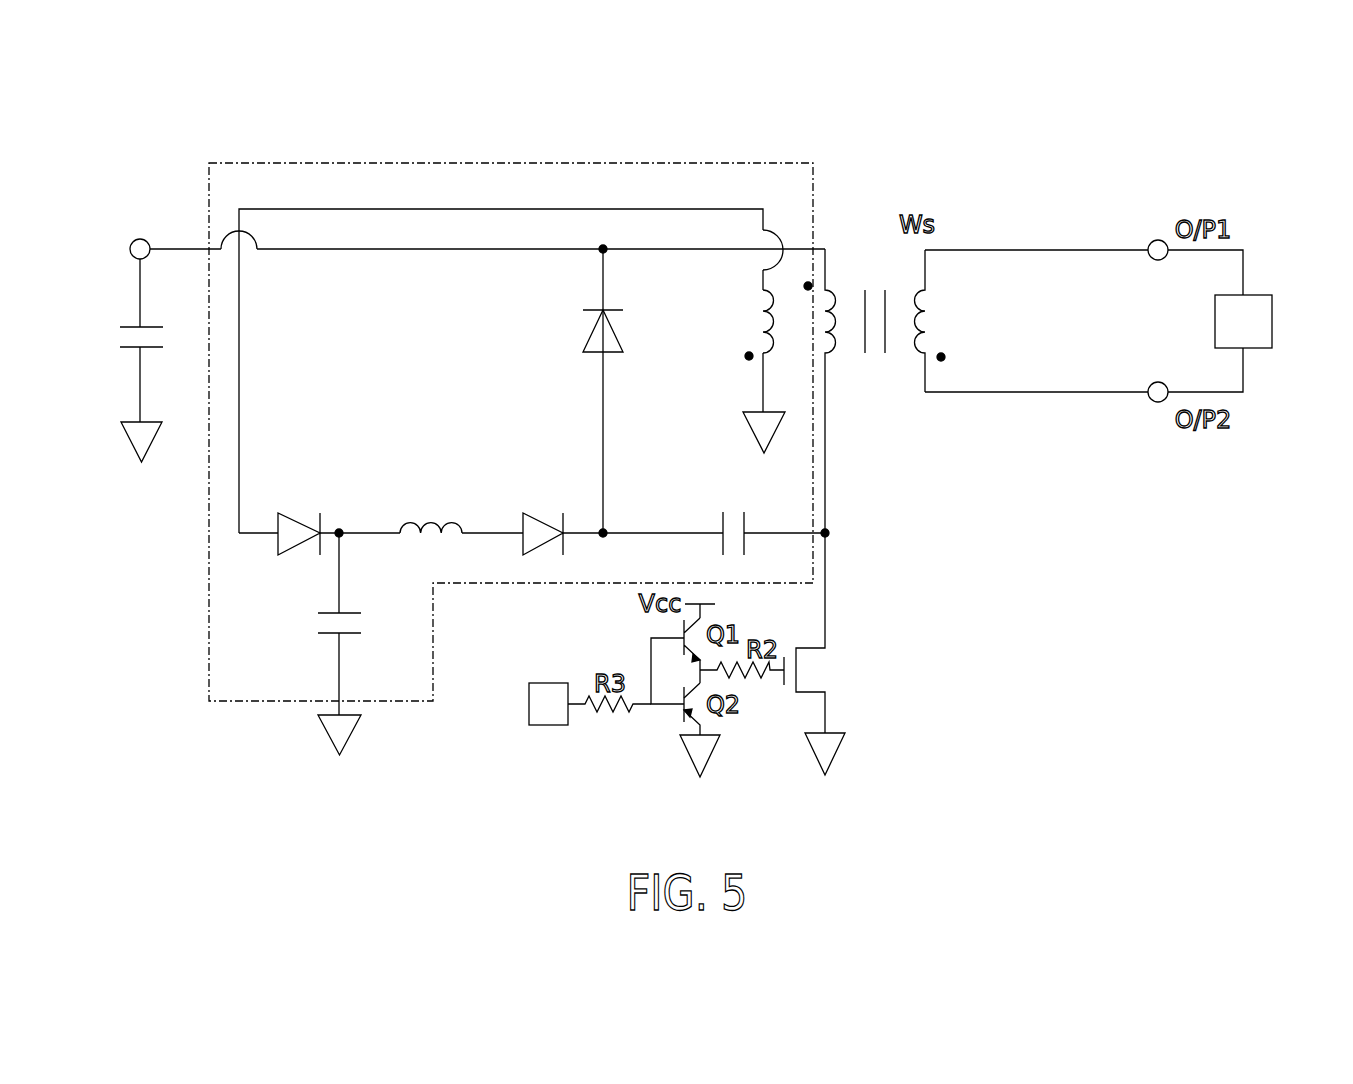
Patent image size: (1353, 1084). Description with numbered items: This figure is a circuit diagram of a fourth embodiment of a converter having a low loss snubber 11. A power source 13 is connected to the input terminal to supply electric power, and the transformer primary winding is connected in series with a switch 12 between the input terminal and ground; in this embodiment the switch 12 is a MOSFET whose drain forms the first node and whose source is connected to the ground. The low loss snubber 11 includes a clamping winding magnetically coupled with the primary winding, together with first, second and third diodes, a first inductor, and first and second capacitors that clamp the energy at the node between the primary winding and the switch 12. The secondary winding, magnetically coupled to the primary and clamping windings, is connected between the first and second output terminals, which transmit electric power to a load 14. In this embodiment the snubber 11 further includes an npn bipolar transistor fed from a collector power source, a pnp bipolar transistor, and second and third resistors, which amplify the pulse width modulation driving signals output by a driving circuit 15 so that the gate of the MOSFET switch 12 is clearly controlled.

The low loss snubber 11 is at (745, 163).
The switch 12 is at (838, 668).
The power source 13 is at (122, 321).
The load 14 is at (1272, 318).
The driving circuit 15 is at (545, 718).